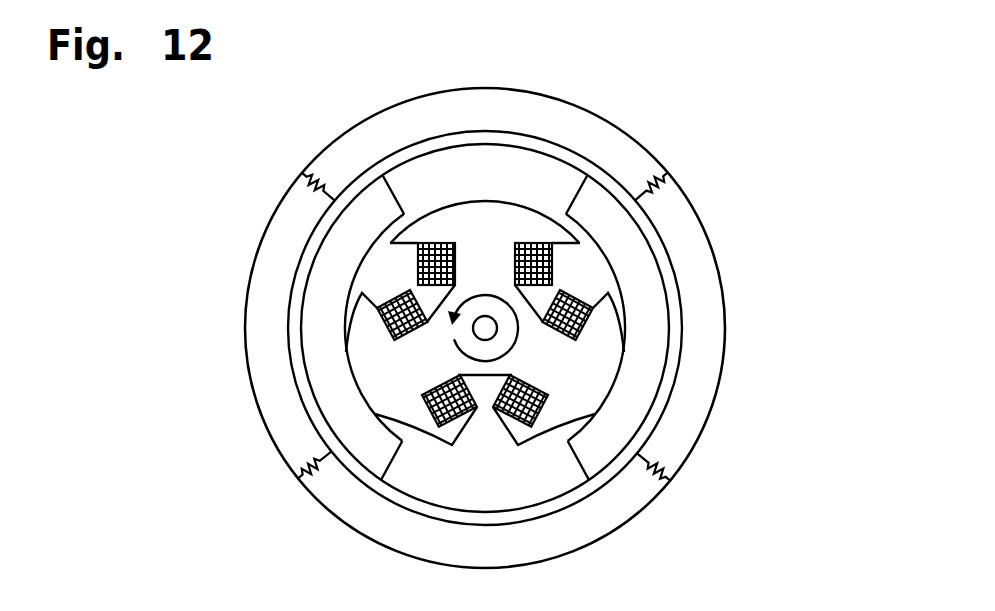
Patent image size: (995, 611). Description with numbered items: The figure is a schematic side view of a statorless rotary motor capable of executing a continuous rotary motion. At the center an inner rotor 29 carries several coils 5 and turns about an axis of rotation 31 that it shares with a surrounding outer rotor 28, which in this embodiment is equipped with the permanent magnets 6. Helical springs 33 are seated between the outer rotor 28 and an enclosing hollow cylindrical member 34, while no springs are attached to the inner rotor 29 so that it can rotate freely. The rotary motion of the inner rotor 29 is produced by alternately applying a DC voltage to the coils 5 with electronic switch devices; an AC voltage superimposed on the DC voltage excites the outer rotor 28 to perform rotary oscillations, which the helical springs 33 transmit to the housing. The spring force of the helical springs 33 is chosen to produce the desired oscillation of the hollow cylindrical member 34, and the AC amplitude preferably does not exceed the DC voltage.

The coil 5 is at (552, 268).
The permanent magnet 6 is at (668, 281).
The outer rotor 28 is at (702, 319).
The inner rotor 29 is at (530, 198).
The axis of rotation 31 is at (492, 330).
The helical spring 33 is at (322, 187).
The hollow cylindrical member 34 is at (637, 160).